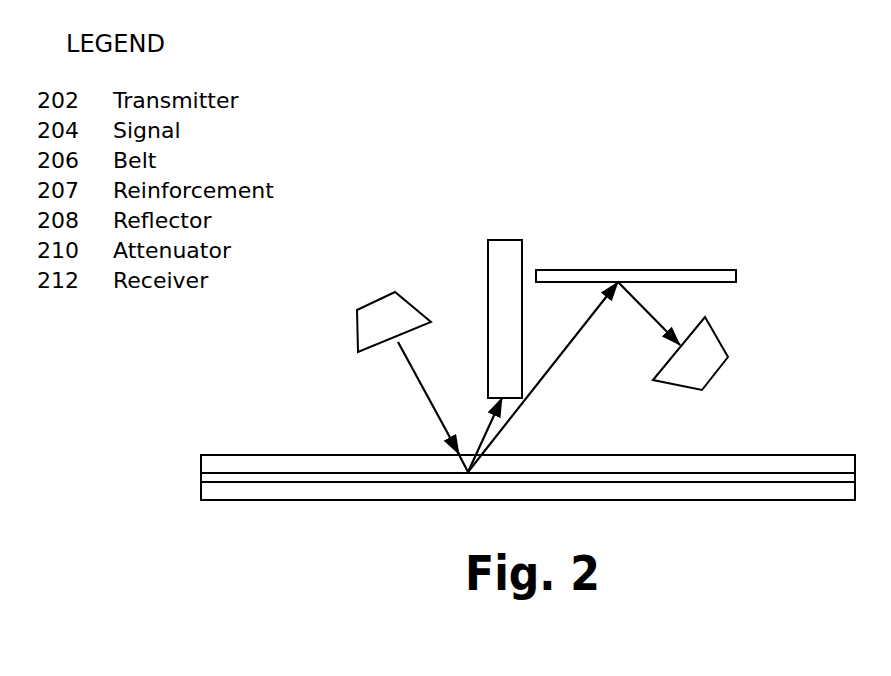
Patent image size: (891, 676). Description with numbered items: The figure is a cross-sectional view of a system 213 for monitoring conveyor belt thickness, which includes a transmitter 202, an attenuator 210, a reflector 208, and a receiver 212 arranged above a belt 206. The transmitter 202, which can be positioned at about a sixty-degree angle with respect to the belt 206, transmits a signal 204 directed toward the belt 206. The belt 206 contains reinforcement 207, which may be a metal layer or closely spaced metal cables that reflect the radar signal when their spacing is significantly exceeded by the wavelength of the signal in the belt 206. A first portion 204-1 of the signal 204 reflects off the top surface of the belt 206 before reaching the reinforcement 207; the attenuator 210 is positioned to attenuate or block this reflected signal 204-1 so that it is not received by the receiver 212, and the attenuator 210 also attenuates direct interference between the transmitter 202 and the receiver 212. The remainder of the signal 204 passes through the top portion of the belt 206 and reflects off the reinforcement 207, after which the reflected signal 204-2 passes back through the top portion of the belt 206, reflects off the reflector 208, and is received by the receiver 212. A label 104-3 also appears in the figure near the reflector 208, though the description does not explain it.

The transmitter 202 is at (380, 305).
The signal 204 is at (422, 395).
The first portion of the signal 204-1 is at (476, 436).
The reflected signal 204-2 is at (516, 412).
The belt 206 is at (214, 455).
The reinforcement 207 is at (201, 478).
The reflector 208 is at (668, 270).
The attenuator 210 is at (503, 256).
The receiver 212 is at (710, 344).
The system 213 is at (757, 103).
The sensor 104-3 is at (764, 220).